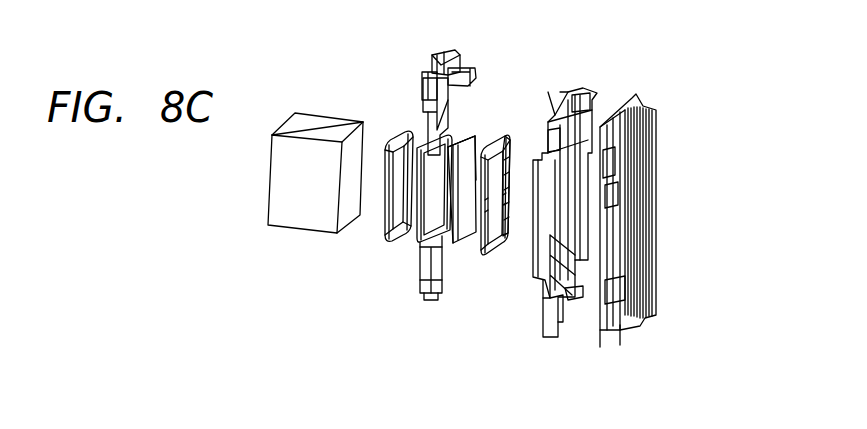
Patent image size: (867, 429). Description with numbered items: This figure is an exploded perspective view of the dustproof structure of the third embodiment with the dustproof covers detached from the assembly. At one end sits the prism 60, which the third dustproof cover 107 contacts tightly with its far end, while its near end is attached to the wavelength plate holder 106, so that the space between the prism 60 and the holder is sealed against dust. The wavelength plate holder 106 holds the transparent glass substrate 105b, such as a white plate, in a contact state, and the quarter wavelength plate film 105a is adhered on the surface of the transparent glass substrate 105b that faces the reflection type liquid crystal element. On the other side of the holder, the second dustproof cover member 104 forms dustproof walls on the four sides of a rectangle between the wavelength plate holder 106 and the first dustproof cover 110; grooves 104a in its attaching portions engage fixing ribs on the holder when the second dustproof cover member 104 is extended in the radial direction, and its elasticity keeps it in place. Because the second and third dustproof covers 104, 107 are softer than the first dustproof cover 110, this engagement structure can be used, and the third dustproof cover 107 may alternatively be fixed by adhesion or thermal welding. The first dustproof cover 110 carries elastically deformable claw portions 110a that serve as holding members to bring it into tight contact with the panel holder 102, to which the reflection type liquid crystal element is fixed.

The prism 60 is at (298, 215).
The panel holder 102 is at (625, 310).
The second dustproof cover member 104 is at (495, 250).
The grooves 104a is at (510, 167).
The quarter wavelength plate film 105a is at (462, 228).
The transparent glass substrate 105b is at (463, 140).
The wavelength plate holder 106 is at (423, 273).
The third dustproof cover 107 is at (392, 238).
The first dustproof cover 110 is at (570, 318).
The claw portions 110a is at (583, 297).